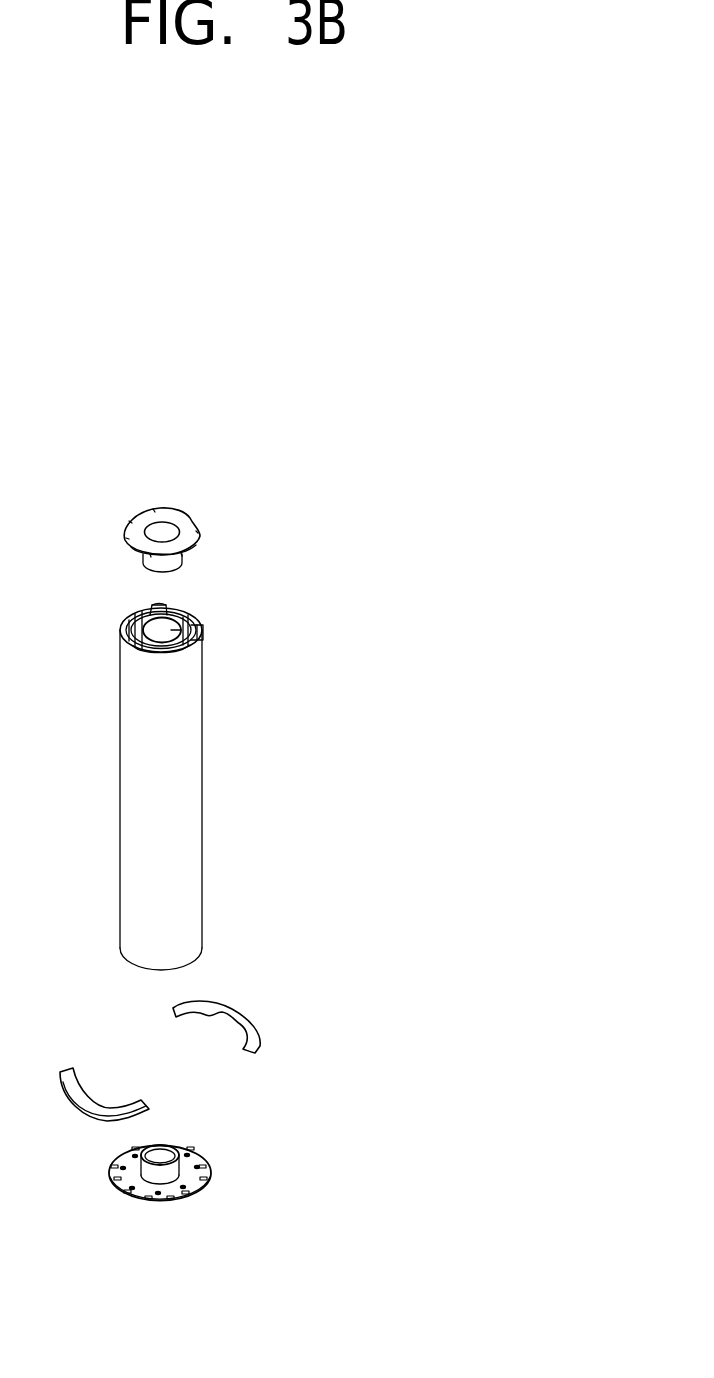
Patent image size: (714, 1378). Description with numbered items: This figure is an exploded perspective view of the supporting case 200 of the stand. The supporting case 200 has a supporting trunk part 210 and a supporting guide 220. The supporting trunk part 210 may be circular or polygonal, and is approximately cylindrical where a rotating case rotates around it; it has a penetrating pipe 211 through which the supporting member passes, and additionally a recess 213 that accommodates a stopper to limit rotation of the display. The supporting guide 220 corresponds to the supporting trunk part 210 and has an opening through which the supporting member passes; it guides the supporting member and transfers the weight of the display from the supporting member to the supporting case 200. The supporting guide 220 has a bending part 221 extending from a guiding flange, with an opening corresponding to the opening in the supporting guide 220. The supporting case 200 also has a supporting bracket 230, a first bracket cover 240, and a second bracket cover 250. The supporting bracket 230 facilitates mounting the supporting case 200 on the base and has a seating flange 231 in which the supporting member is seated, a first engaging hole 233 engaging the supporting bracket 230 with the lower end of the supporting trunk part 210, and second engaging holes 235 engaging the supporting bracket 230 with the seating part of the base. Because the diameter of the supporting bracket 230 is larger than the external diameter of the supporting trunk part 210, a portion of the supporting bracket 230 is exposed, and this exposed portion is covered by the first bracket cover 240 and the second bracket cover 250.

The supporting case 200 is at (274, 484).
The supporting trunk part 210 is at (196, 785).
The penetrating pipe 211 is at (204, 637).
The recess 213 is at (185, 615).
The supporting guide 220 is at (125, 530).
The bending part 221 is at (142, 565).
The supporting bracket 230 is at (228, 1295).
The seating flange 231 is at (153, 1258).
The first engaging hole 233 is at (208, 1198).
The second engaging hole 235 is at (123, 1200).
The first bracket cover 240 is at (62, 1067).
The second bracket cover 250 is at (245, 1003).